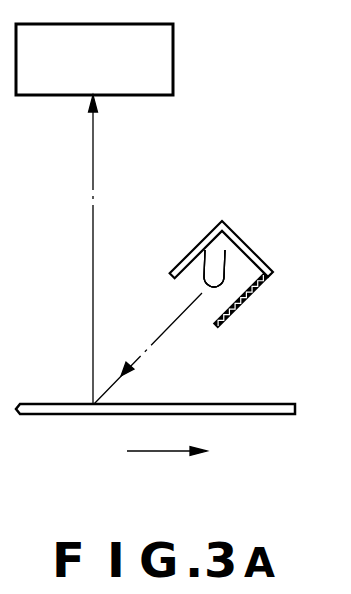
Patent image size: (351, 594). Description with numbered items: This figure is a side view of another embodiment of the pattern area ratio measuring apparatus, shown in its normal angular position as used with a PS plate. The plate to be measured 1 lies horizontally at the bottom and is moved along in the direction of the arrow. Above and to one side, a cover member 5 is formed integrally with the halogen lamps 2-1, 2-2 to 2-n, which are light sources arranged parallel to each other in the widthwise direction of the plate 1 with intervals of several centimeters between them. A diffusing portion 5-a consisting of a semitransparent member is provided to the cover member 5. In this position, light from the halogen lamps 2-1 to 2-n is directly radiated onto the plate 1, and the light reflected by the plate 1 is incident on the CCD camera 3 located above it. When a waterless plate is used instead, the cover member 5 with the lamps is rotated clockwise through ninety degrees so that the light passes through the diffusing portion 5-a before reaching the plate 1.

The plate to be measured 1 is at (47, 403).
The CCD camera 3 is at (173, 52).
The cover member 5 is at (264, 259).
The diffusing portion 5-a is at (242, 312).
The halogen lamp 2-1 is at (212, 262).
The halogen lamp 2-2 is at (230, 223).
The halogen lamp 2-n is at (268, 223).